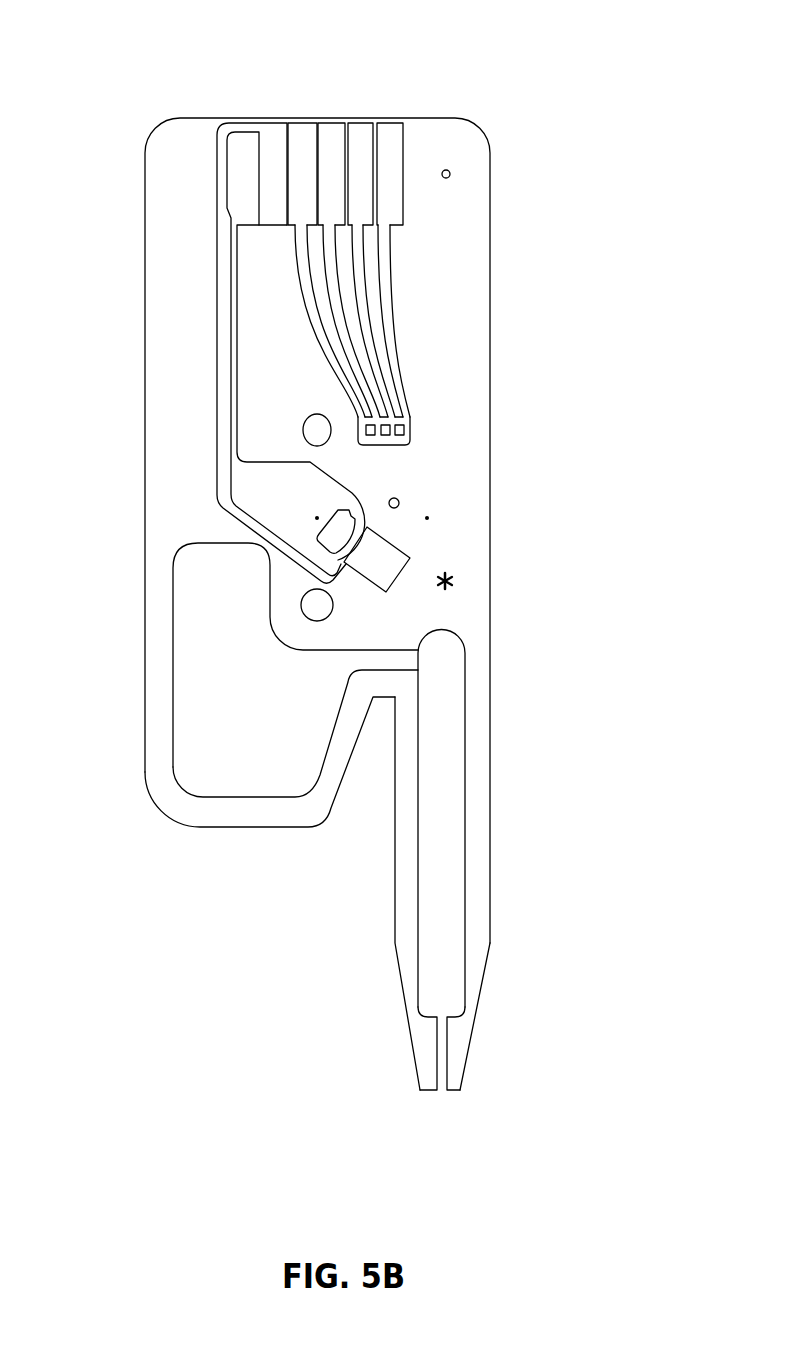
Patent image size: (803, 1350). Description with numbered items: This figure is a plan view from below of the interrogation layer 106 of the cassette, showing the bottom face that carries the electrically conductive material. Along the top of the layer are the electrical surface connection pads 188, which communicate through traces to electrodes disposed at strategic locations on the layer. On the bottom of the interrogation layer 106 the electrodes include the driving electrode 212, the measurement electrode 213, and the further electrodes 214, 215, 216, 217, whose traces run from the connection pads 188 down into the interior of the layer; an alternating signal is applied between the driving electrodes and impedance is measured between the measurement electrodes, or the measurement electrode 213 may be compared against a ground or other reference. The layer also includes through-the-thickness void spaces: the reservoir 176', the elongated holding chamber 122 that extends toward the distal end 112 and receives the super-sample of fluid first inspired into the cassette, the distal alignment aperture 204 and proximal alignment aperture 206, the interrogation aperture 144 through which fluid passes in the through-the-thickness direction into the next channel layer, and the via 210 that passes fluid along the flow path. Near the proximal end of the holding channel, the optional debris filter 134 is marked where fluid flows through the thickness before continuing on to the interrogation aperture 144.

The electrical surface connection pads 188 is at (335, 88).
The interrogation layer 106 is at (433, 137).
The electrode 217 is at (300, 283).
The electrode 216 is at (340, 303).
The electrode 215 is at (365, 325).
The electrode 214 is at (402, 352).
The proximal alignment aperture 206 is at (315, 431).
The interrogation aperture 144 is at (289, 504).
The via 210 is at (398, 499).
The measurement electrode 213 is at (350, 519).
The driving electrode 212 is at (398, 551).
The reservoir 176' is at (236, 670).
The debris filter 134 is at (476, 593).
The distal alignment aperture 204 is at (317, 605).
The holding chamber 122 is at (438, 858).
The distal end 112 is at (352, 1052).